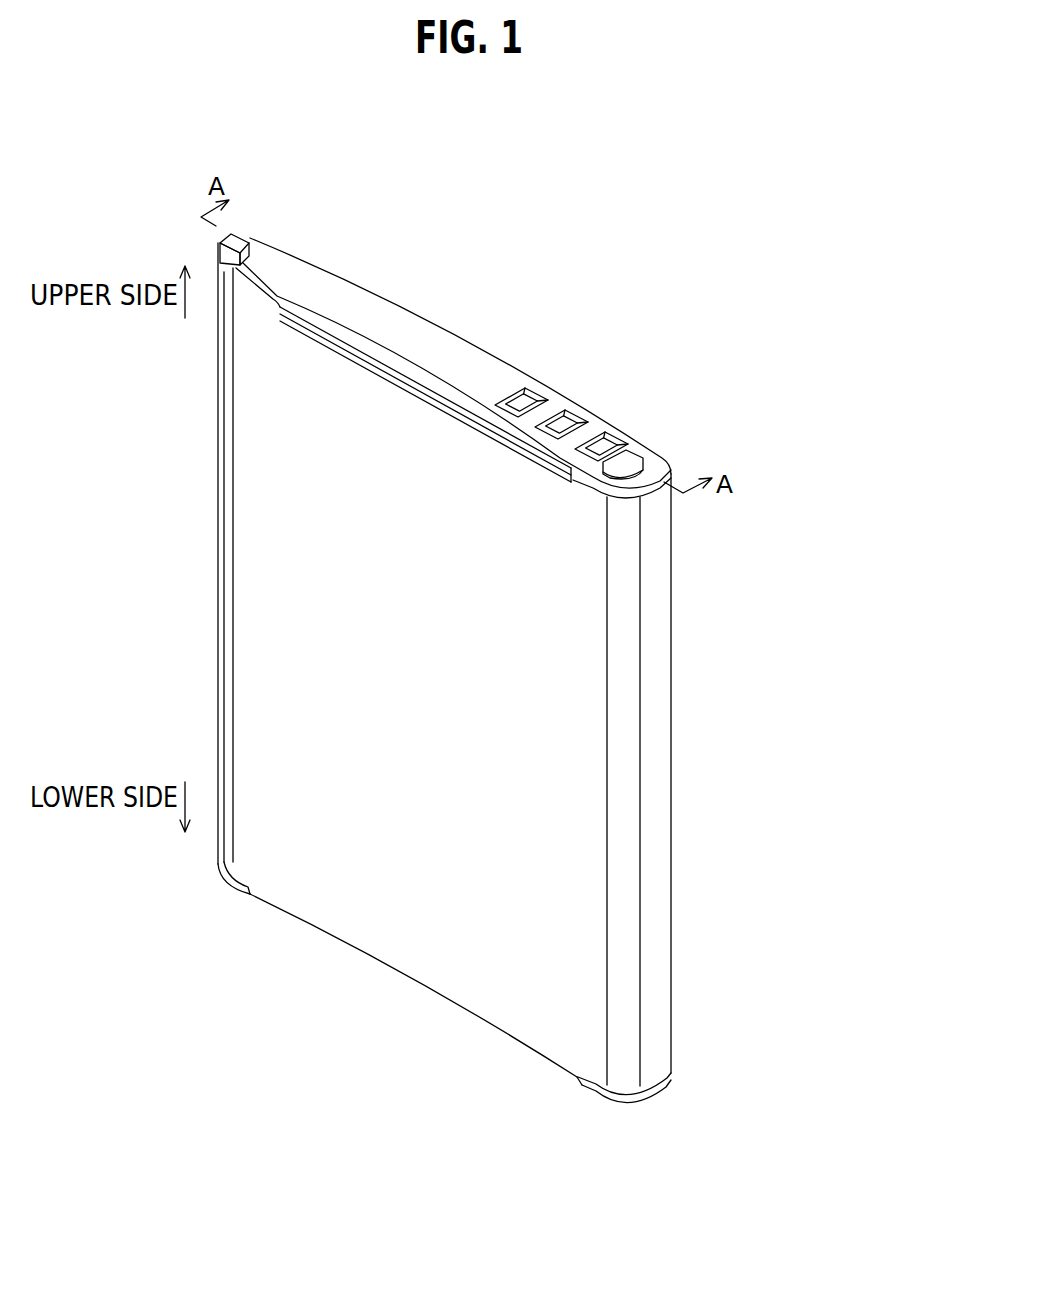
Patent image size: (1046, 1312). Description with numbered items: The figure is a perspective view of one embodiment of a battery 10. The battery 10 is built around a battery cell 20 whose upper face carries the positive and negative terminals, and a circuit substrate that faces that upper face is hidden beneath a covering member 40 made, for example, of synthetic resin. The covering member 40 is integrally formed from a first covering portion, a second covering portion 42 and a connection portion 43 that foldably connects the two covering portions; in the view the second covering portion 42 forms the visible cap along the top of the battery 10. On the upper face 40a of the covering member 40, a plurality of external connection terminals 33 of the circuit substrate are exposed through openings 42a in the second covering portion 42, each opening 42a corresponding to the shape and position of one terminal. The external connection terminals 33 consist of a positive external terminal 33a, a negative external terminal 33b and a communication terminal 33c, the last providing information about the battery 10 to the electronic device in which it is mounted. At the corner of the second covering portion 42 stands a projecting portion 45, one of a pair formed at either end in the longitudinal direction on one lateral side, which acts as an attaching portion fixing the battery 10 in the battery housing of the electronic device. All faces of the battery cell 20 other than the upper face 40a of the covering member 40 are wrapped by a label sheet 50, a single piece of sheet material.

The battery 10 is at (430, 248).
The battery cell 20 is at (651, 1099).
The external connection terminals 33 is at (587, 382).
The positive external terminal 33a is at (526, 400).
The negative external terminal 33b is at (620, 414).
The communication terminal 33c is at (566, 418).
The covering member 40 is at (468, 328).
The upper face of the covering member 40a is at (434, 347).
The second covering portion 42 is at (476, 337).
The openings 42a is at (628, 440).
The connection portion 43 is at (315, 330).
The projecting portions 45 is at (232, 242).
The label sheet 50 is at (668, 748).